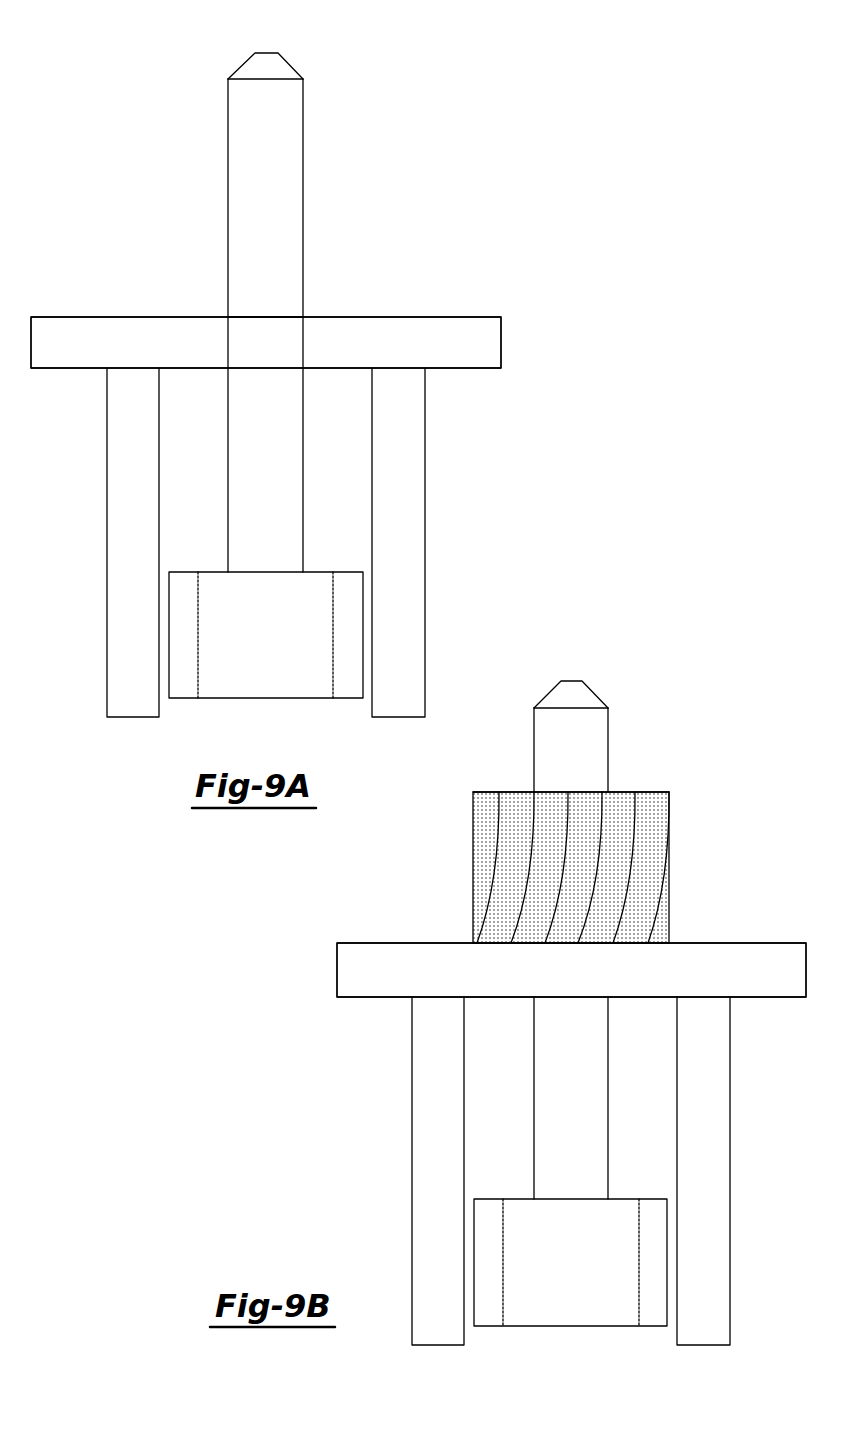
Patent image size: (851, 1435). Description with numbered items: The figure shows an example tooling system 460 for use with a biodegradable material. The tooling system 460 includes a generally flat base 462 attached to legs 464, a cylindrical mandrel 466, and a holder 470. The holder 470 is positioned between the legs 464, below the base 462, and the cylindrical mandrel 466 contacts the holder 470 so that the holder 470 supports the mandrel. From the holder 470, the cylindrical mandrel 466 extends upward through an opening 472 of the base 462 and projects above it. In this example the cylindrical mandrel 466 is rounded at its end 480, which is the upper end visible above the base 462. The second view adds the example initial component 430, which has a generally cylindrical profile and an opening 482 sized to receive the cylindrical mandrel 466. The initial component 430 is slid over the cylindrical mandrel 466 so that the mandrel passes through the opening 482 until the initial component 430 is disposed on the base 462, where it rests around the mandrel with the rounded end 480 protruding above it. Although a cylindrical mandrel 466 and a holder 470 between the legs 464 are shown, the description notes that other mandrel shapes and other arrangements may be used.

In FIG. 9B, the initial component 430 is at (650, 838).
In FIG. 9A, the tooling system 460 is at (445, 590).
In FIG. 9B, the tooling system 460 is at (743, 1217).
In FIG. 9A, the base 462 is at (433, 317).
In FIG. 9B, the base 462 is at (738, 943).
In FIG. 9A, the legs 464 is at (127, 450).
In FIG. 9B, the legs 464 is at (430, 1078).
In FIG. 9A, the cylindrical mandrel 466 is at (283, 170).
In FIG. 9B, the cylindrical mandrel 466 is at (593, 742).
In FIG. 9A, the holder 470 is at (279, 648).
In FIG. 9B, the holder 470 is at (584, 1276).
In FIG. 9A, the opening 472 is at (303, 317).
In FIG. 9A, the end 480 is at (225, 63).
In FIG. 9B, the end 480 is at (613, 687).
In FIG. 9B, the opening 482 is at (534, 791).